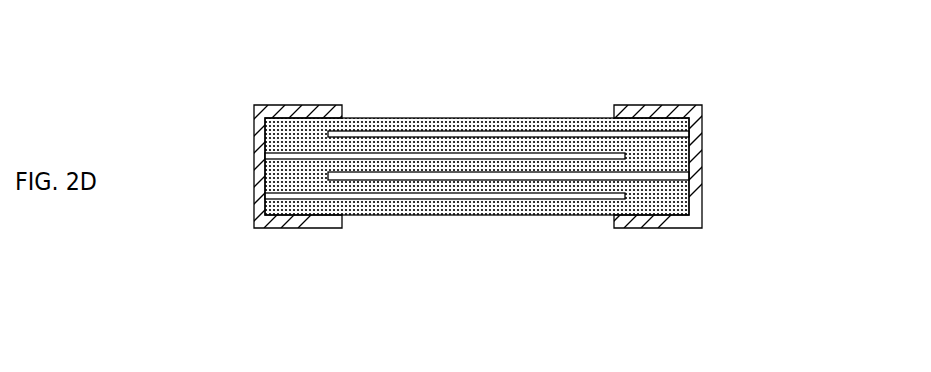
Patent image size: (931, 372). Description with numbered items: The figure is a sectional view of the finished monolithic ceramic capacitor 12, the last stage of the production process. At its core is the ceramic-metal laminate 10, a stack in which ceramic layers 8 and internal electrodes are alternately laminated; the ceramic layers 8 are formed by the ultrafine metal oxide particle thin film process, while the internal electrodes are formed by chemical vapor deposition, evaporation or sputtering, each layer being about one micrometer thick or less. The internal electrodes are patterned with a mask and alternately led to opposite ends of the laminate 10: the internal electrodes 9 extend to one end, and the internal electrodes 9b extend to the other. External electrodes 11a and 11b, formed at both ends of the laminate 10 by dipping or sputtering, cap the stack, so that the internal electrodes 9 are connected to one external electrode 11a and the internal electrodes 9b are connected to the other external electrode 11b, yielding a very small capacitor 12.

The ceramic layer 8 is at (388, 162).
The internal electrode 9 is at (300, 157).
The internal electrode 9b is at (670, 177).
The ceramic-metal laminate 10 is at (498, 118).
The external electrode 11a is at (257, 177).
The external electrode 11b is at (695, 187).
The monolithic ceramic capacitor 12 is at (618, 85).